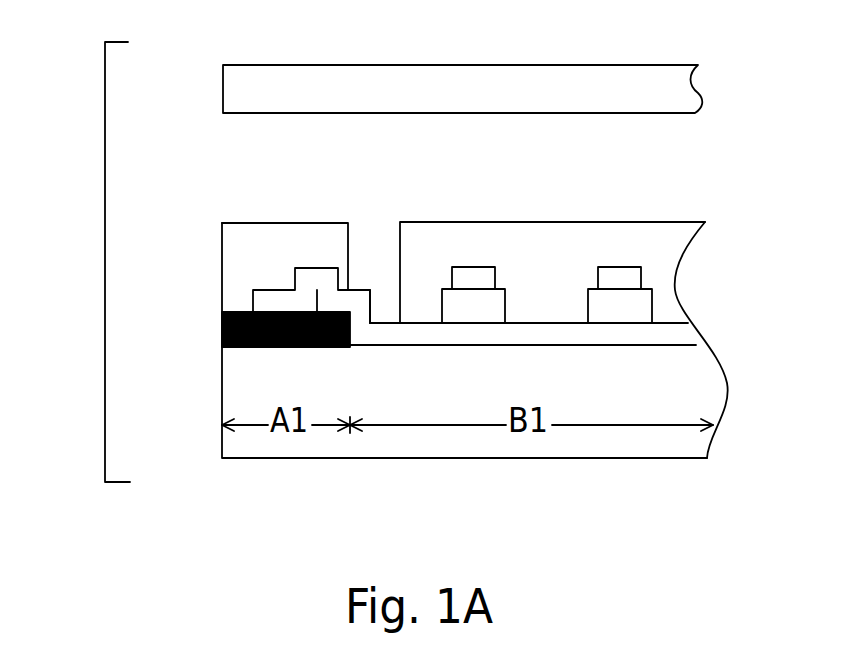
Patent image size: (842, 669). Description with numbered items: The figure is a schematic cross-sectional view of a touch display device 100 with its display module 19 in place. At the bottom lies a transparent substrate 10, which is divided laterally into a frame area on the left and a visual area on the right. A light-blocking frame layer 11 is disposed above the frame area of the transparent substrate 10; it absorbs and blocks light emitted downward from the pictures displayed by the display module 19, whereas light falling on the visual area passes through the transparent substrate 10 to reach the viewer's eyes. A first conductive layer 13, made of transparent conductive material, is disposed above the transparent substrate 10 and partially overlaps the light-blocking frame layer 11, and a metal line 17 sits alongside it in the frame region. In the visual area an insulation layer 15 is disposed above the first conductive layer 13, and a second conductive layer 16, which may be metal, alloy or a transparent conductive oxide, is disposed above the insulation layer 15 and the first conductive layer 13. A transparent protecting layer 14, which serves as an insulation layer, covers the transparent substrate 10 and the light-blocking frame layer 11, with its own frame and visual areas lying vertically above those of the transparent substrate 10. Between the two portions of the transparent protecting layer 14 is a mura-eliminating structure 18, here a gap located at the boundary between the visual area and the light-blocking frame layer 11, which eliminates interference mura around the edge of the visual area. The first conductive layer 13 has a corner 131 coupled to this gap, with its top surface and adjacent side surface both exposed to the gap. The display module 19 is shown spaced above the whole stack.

The touch display device 100 is at (105, 262).
The transparent substrate 10 is at (240, 382).
The light-blocking frame layer 11 is at (222, 335).
The first conductive layer 13 is at (332, 300).
The corner 131 is at (370, 290).
The transparent protecting layer 14 is at (243, 240).
The insulation layer 15 is at (472, 302).
The second conductive layer 16 is at (622, 277).
The metal line 17 is at (290, 300).
The mura-eliminating structure 18 is at (378, 255).
The display module 19 is at (395, 82).